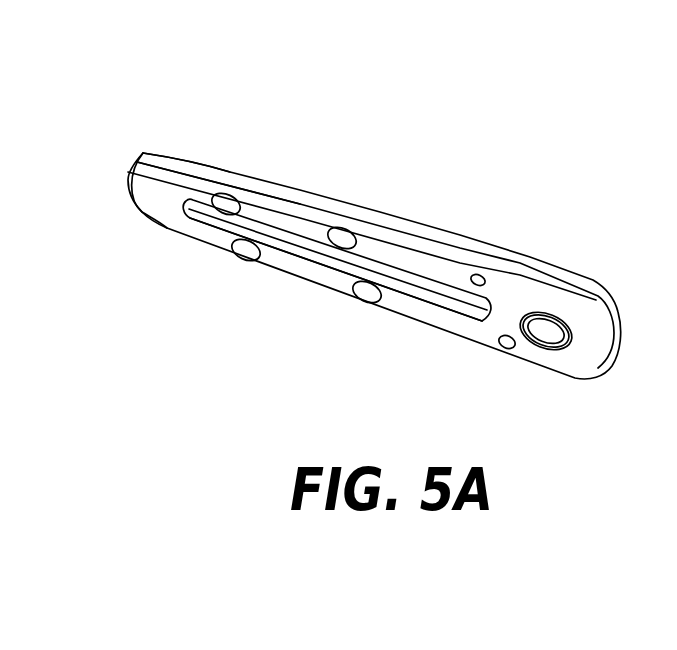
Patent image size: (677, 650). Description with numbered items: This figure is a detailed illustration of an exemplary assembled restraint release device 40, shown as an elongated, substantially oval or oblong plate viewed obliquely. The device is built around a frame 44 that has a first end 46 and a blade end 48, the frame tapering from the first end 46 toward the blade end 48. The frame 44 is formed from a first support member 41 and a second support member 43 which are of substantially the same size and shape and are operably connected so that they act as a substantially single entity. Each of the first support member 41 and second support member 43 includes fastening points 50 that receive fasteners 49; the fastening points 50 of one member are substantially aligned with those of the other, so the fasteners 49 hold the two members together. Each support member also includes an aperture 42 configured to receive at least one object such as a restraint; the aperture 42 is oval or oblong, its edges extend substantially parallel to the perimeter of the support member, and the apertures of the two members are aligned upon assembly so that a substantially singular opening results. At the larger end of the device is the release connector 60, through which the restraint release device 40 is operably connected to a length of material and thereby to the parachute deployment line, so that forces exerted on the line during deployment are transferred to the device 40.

The restraint release device 40 is at (650, 143).
The first support member 41 is at (157, 197).
The aperture 42 is at (388, 282).
The second support member 43 is at (229, 176).
The frame 44 is at (143, 153).
The first end 46 is at (500, 349).
The blade end 48 is at (186, 206).
The fasteners 49 is at (252, 257).
The fastening points 50 is at (482, 276).
The release connector 60 is at (550, 318).